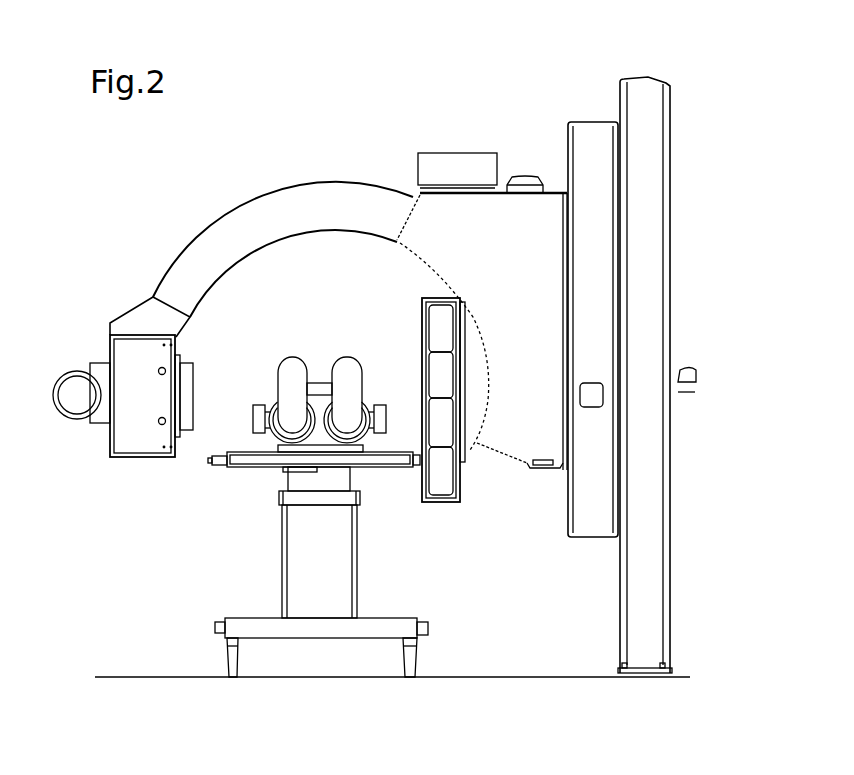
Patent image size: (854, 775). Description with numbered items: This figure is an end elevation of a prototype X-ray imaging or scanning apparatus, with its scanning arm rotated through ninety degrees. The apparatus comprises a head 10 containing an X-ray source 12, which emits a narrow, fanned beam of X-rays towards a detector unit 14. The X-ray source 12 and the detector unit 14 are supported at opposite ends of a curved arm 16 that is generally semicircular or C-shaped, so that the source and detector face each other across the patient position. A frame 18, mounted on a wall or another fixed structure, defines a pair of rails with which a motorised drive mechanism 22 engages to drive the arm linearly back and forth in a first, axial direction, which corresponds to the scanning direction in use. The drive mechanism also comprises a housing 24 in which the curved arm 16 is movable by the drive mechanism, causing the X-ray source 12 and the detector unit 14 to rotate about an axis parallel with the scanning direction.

The head 10 is at (143, 447).
The X-ray source 12 is at (63, 420).
The detector unit 14 is at (445, 422).
The curved arm 16 is at (293, 203).
The frame 18 is at (603, 295).
The motorised drive mechanism 22 is at (525, 177).
The housing 24 is at (517, 262).